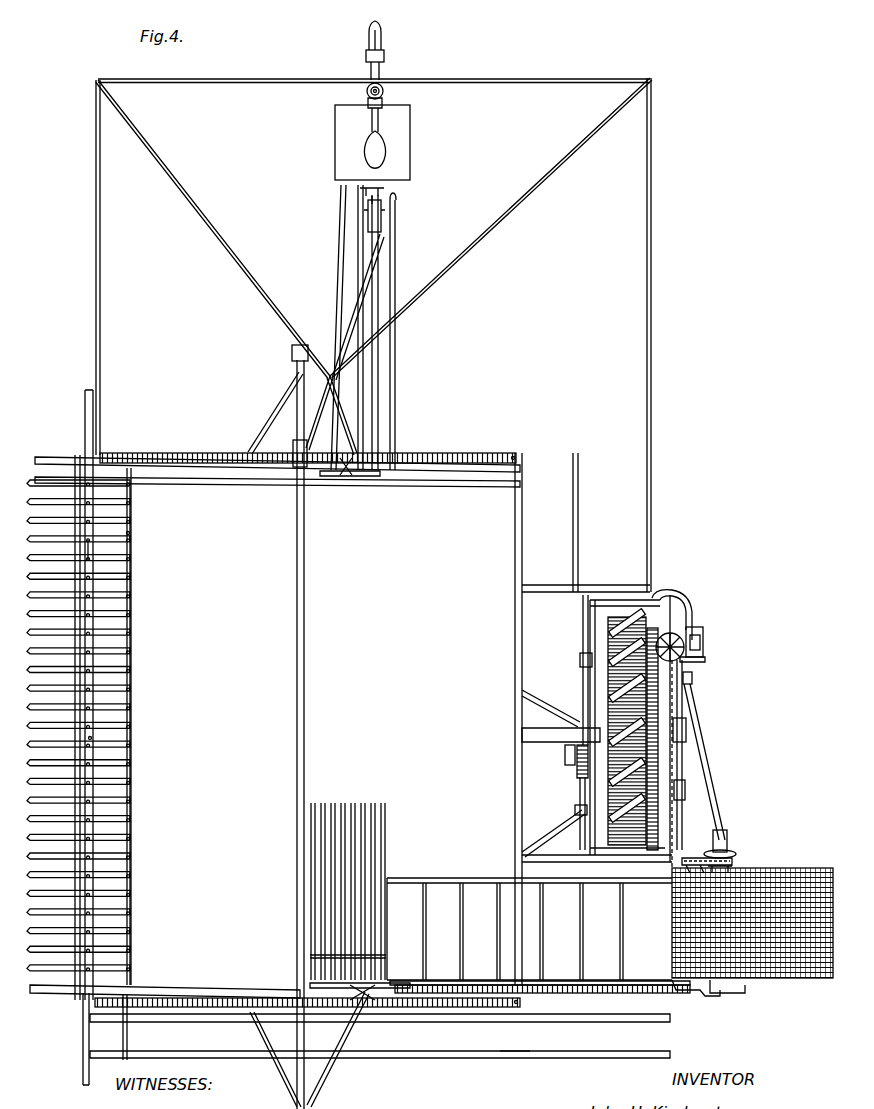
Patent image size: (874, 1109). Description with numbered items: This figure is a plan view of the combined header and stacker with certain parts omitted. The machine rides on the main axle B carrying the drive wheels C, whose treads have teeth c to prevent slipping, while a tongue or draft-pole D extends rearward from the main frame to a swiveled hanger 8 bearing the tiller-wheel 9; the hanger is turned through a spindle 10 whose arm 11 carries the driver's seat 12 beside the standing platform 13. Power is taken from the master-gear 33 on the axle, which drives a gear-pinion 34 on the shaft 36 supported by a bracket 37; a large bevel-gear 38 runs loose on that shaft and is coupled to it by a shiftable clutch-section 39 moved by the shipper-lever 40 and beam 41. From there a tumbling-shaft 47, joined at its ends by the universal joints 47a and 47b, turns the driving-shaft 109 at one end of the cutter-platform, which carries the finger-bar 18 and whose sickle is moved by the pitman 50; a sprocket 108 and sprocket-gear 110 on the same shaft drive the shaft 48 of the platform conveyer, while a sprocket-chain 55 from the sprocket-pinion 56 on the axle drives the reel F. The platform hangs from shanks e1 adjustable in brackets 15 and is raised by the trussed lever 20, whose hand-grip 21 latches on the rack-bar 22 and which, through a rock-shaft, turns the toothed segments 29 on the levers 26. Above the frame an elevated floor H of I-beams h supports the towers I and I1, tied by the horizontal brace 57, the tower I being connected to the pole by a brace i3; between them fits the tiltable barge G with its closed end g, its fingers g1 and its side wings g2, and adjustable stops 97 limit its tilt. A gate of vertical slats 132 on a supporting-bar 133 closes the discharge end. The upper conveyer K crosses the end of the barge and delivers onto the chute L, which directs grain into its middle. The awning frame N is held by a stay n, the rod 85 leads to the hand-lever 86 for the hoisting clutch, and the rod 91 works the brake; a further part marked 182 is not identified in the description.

The tiller-wheel 9 is at (381, 40).
The vertical hanger 8 is at (366, 57).
The spindle 10 is at (381, 86).
The forwardly-extending arm 11 is at (379, 118).
The seat 12 is at (378, 142).
The standing platform 13 is at (410, 140).
The tongue or draft-pole D is at (380, 190).
The hand-grip 21 is at (358, 200).
The hand-lever 86 is at (396, 200).
The upright rack-bar 22 is at (381, 213).
The rod 91 is at (343, 250).
The rod 85 is at (395, 255).
The trussed lever 20 is at (378, 278).
The stay n is at (240, 258).
The frame N is at (100, 300).
The tower I is at (270, 412).
The brace i3 is at (331, 415).
The side wings g2 is at (45, 1020).
The floor H is at (520, 469).
The stop 97 is at (350, 476).
The vertical slats 132 is at (95, 533).
The supporting-bar 133 is at (90, 556).
The rivet 182 is at (95, 740).
The horizontal brace 57 is at (304, 606).
The receiver or barge G is at (326, 719).
The beam 41 is at (600, 587).
The large bevel-gear 38 is at (672, 630).
The gear-pinion 34 is at (650, 628).
The shipper-lever 40 is at (692, 600).
The shiftable clutch-section 39 is at (703, 637).
The shaft 36 is at (700, 644).
The bracket 37 is at (705, 660).
The universal joint 47a is at (692, 679).
The shank e1 is at (580, 660).
The brackets 15 is at (582, 672).
The teeth c is at (606, 682).
The carrying-wheels C is at (597, 728).
The master-gear 33 is at (683, 702).
The sprocket-pinion 56 is at (686, 728).
The tumbling-shaft 47 is at (713, 757).
The closed end g is at (530, 692).
The I-beams h is at (556, 755).
The toothed segment 29 is at (572, 752).
The levers 26 is at (578, 790).
The main axle B is at (592, 761).
The sprocket-chain 55 is at (675, 800).
The shaft 48 is at (700, 858).
The universal joint 47b is at (727, 840).
The sprocket 108 is at (736, 854).
The sprocket-gear 110 is at (732, 870).
The horizontal upper conveyer K is at (470, 900).
The chute L is at (372, 835).
The fingers or slats g1 is at (120, 775).
The finger-bar 18 is at (585, 1003).
The pitman 50 is at (690, 996).
The horizontal driving-shaft 109 is at (740, 993).
The reel F is at (515, 1062).
The tower I1 is at (322, 1086).